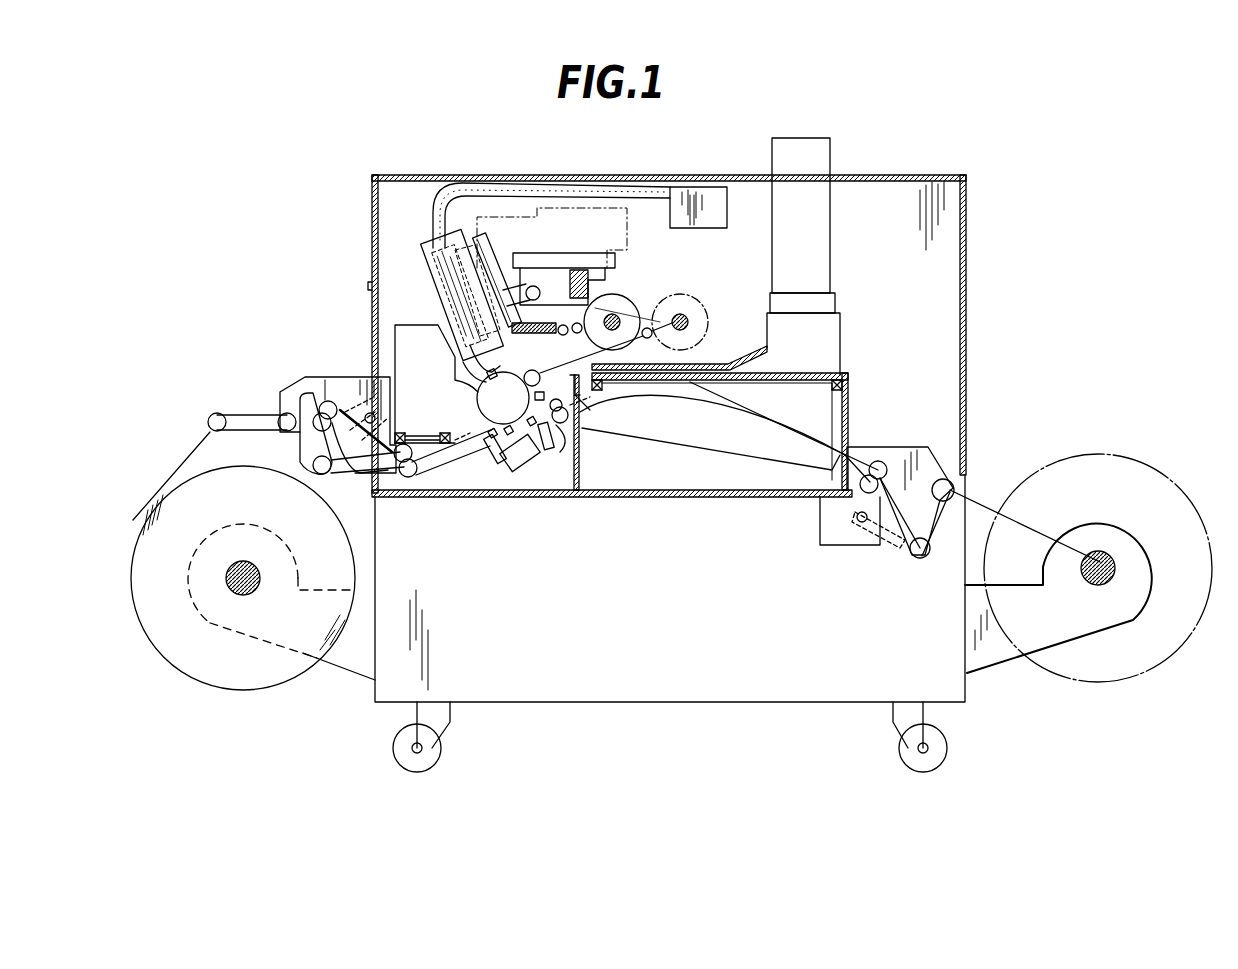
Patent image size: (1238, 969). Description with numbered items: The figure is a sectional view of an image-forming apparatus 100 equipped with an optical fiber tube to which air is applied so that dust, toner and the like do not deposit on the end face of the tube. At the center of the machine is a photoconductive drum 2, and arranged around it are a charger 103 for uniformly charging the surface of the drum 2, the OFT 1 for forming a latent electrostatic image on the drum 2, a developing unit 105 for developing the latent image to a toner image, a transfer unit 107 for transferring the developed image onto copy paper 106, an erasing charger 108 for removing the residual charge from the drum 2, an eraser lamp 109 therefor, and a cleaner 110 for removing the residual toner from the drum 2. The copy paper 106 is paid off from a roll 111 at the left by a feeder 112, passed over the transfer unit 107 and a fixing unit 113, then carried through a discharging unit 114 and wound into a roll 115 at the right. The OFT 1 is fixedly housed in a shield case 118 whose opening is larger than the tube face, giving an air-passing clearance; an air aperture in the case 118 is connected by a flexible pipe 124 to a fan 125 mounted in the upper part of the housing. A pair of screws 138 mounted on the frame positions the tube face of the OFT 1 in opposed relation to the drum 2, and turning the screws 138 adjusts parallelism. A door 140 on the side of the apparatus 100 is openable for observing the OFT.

The optical fiber tube 1 is at (470, 333).
The photoconductive drum 2 is at (511, 411).
The image-forming apparatus 100 is at (968, 224).
The charger 103 is at (470, 360).
The developing unit 105 is at (444, 402).
The copy paper 106 is at (183, 455).
The transfer unit 107 is at (492, 455).
The erasing charger 108 is at (566, 428).
The eraser lamp 109 is at (578, 408).
The cleaner 110 is at (542, 373).
The roll 111 is at (278, 680).
The feeder 112 is at (333, 378).
The fixing unit 113 is at (718, 434).
The discharging unit 114 is at (897, 445).
The roll 115 is at (1110, 557).
The shield case 118 is at (438, 272).
The flexible pipe 124 is at (618, 184).
The fan 125 is at (703, 222).
The screws 138 is at (523, 370).
The door 140 is at (372, 248).